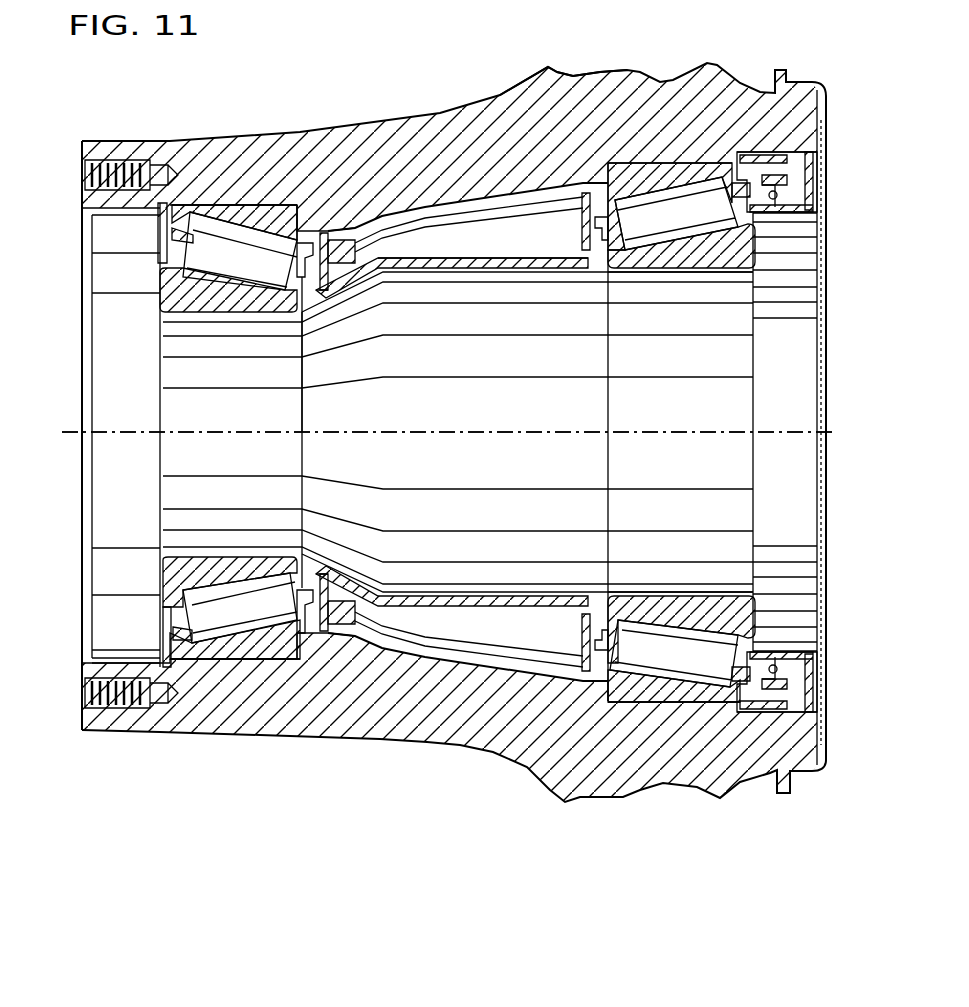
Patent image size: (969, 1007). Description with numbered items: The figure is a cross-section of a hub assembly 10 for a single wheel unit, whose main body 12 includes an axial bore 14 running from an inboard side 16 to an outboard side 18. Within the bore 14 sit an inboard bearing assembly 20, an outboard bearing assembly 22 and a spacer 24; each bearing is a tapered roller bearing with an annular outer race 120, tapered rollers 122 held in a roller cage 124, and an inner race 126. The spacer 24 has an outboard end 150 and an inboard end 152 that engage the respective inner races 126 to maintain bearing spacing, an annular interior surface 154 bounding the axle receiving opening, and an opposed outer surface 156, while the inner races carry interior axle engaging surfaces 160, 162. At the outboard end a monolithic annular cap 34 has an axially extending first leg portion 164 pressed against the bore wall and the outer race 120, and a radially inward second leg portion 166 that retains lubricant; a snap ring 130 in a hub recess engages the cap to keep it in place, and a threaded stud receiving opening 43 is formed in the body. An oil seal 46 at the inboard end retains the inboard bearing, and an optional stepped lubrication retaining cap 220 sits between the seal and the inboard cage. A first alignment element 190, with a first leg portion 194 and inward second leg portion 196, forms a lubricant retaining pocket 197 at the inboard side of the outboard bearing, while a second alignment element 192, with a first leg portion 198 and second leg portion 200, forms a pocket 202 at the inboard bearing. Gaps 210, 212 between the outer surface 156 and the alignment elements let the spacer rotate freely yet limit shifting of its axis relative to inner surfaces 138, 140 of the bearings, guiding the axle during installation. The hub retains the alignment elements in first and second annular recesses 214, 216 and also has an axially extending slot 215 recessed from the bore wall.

The hub assembly 10 is at (362, 783).
The main body 12 is at (403, 742).
The axial bore 14 is at (520, 650).
The inboard side 16 is at (835, 585).
The outboard side 18 is at (72, 505).
The inboard bearing assembly 20 is at (668, 707).
The outboard bearing assembly 22 is at (232, 668).
The spacer 24 is at (473, 603).
The cap 34 is at (156, 622).
The threaded stud receiving opening 43 is at (50, 155).
The oil seal 46 is at (790, 163).
The outer race 120 is at (240, 203).
The tapered rollers 122 is at (650, 172).
The roller cage 124 is at (174, 228).
The inner race 126 is at (213, 312).
The snap ring 130 is at (160, 653).
The inner surface 138 is at (745, 312).
The inner surface 140 is at (175, 367).
The outboard end 150 is at (292, 570).
The inboard end 152 is at (614, 622).
The interior surface 154 is at (407, 598).
The outer surface 156 is at (423, 612).
The interior axle engaging surface 160 is at (272, 296).
The interior axle engaging surface 162 is at (648, 270).
The first leg portion 164 is at (182, 663).
The second leg portion 166 is at (160, 634).
The first alignment element 190 is at (312, 226).
The second alignment element 192 is at (585, 185).
The first leg portion 194 is at (330, 200).
The second leg portion 196 is at (350, 225).
The lubricant retaining pocket 197 is at (303, 212).
The first leg portion 198 is at (548, 66).
The second leg portion 200 is at (465, 202).
The pocket 202 is at (612, 168).
The gap 210 is at (320, 296).
The gap 212 is at (587, 262).
The first annular recess 214 is at (319, 660).
The axially extending slot 215 is at (440, 200).
The second annular recess 216 is at (600, 660).
The lubrication retaining cap 220 is at (760, 93).